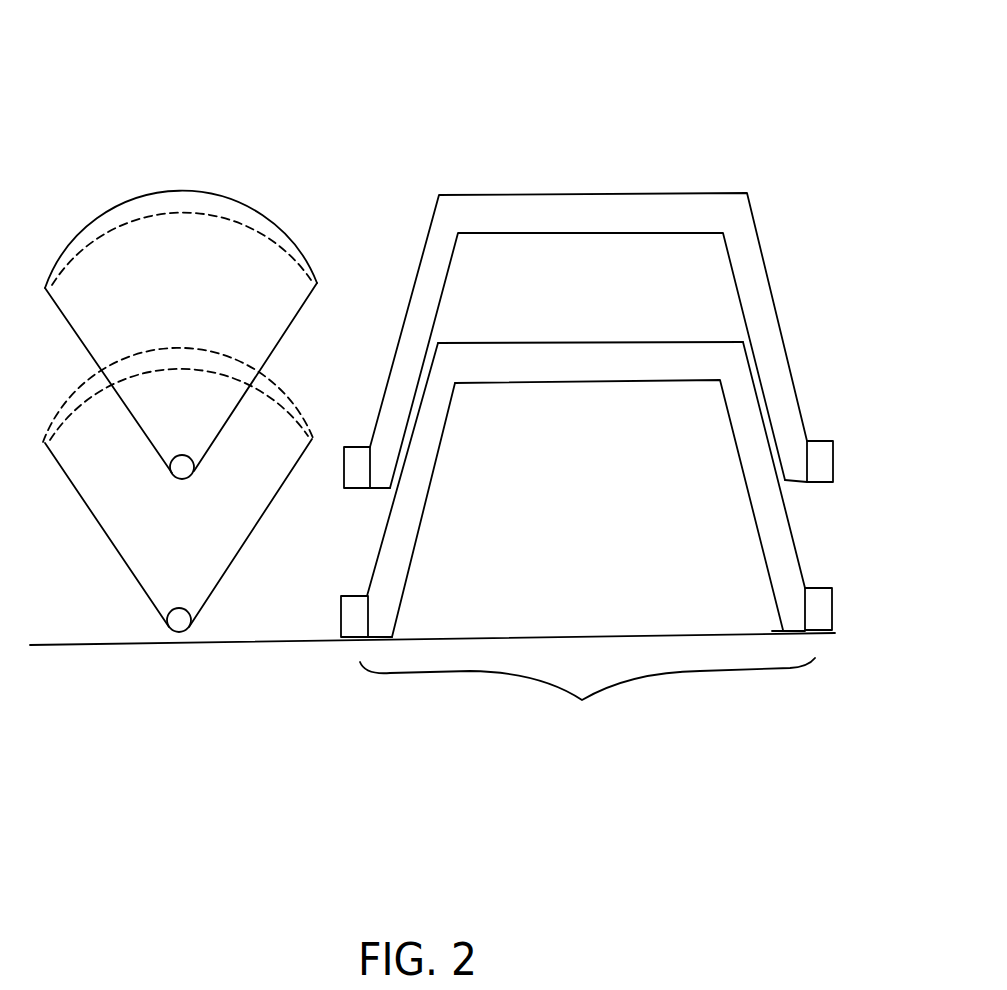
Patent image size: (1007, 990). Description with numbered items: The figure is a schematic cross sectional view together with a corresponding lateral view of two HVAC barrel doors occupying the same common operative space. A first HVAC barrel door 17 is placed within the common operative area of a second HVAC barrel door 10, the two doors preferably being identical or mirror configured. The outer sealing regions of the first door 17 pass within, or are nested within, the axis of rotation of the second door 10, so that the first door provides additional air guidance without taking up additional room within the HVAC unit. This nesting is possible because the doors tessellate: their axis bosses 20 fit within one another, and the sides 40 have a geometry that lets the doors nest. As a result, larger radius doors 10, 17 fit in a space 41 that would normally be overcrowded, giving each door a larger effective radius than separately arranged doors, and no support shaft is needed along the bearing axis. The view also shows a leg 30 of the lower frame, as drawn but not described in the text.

The second HVAC barrel door 10 is at (583, 193).
The first HVAC barrel door 17 is at (665, 338).
The axis bosses 20 is at (352, 490).
The leg 30 is at (398, 608).
The side 40 is at (599, 373).
The space 41 is at (587, 702).